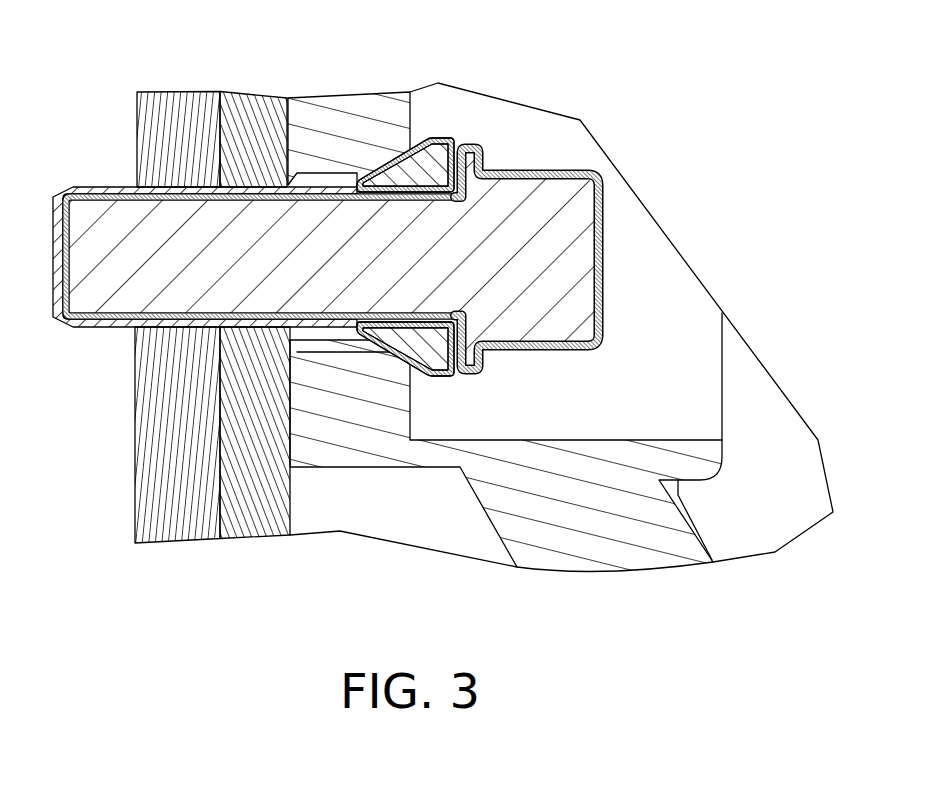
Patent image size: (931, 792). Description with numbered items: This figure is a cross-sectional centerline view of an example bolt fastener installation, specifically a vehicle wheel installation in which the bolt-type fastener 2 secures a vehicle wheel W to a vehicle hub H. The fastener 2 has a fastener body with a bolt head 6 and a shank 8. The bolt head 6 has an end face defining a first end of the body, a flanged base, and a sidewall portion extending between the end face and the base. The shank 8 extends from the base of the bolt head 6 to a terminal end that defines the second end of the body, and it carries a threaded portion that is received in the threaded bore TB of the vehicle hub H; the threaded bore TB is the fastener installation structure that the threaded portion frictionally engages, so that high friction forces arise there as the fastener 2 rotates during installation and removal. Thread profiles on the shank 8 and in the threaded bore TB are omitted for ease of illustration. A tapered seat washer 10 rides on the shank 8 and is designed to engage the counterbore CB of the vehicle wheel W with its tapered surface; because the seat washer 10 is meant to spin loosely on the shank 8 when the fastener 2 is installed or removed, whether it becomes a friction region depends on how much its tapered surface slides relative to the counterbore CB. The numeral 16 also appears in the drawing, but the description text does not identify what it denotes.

The bolt-type fastener 2 is at (355, 253).
The bolt head 6 is at (547, 267).
The shank 8 is at (281, 256).
The tapered seat washer 10 is at (427, 162).
The sheath 16 is at (105, 187).
The vehicle hub H is at (222, 92).
The vehicle wheel W is at (417, 77).
The threaded bore TB is at (125, 327).
The counterbore CB is at (433, 378).